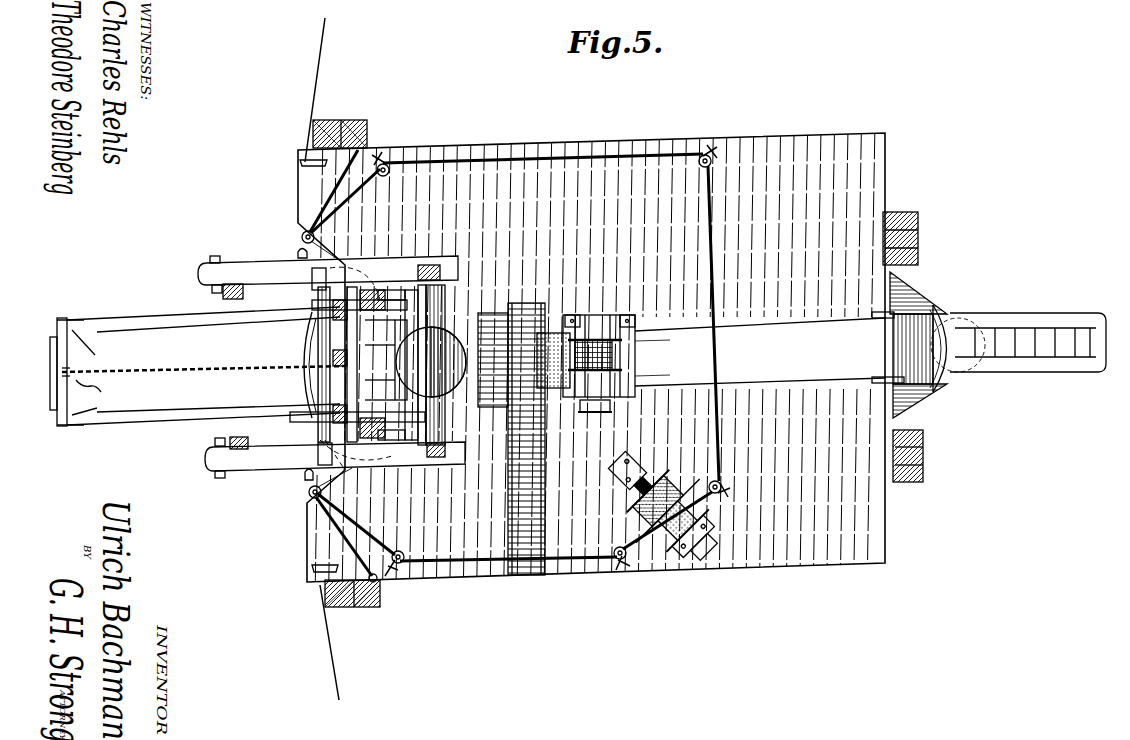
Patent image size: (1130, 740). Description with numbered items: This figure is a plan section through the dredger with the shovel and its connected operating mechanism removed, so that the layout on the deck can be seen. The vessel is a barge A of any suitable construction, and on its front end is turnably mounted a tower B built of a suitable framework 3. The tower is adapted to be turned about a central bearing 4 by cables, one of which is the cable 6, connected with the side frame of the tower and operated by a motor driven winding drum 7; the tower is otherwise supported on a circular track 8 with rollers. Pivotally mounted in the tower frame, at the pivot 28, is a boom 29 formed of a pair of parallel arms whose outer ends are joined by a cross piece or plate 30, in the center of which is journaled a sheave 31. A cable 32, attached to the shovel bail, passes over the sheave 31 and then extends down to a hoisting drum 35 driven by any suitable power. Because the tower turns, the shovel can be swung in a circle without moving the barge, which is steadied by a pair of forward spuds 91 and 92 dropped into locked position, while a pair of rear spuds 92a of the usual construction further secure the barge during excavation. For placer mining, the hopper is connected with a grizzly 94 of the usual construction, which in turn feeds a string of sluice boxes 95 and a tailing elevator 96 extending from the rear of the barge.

The barge A is at (591, 357).
The tower B is at (398, 270).
The framework 3 is at (440, 266).
The central bearing 4 is at (448, 330).
The cable 6 is at (516, 140).
The motor driven winding drum 7 is at (655, 552).
The circular track 8 is at (288, 369).
The pivotal mounting 28 is at (414, 292).
The boom 29 is at (203, 362).
The cross piece or plate 30 is at (80, 332).
The sheave 31 is at (95, 392).
The cable 32 is at (205, 368).
The hoisting drum 35 is at (590, 328).
The forward spud 91 is at (340, 121).
The forward spud 92 is at (355, 606).
The rear spuds 92a is at (918, 240).
The grizzly 94 is at (492, 332).
The string of sluice boxes 95 is at (769, 349).
The tailing elevator 96 is at (1000, 330).